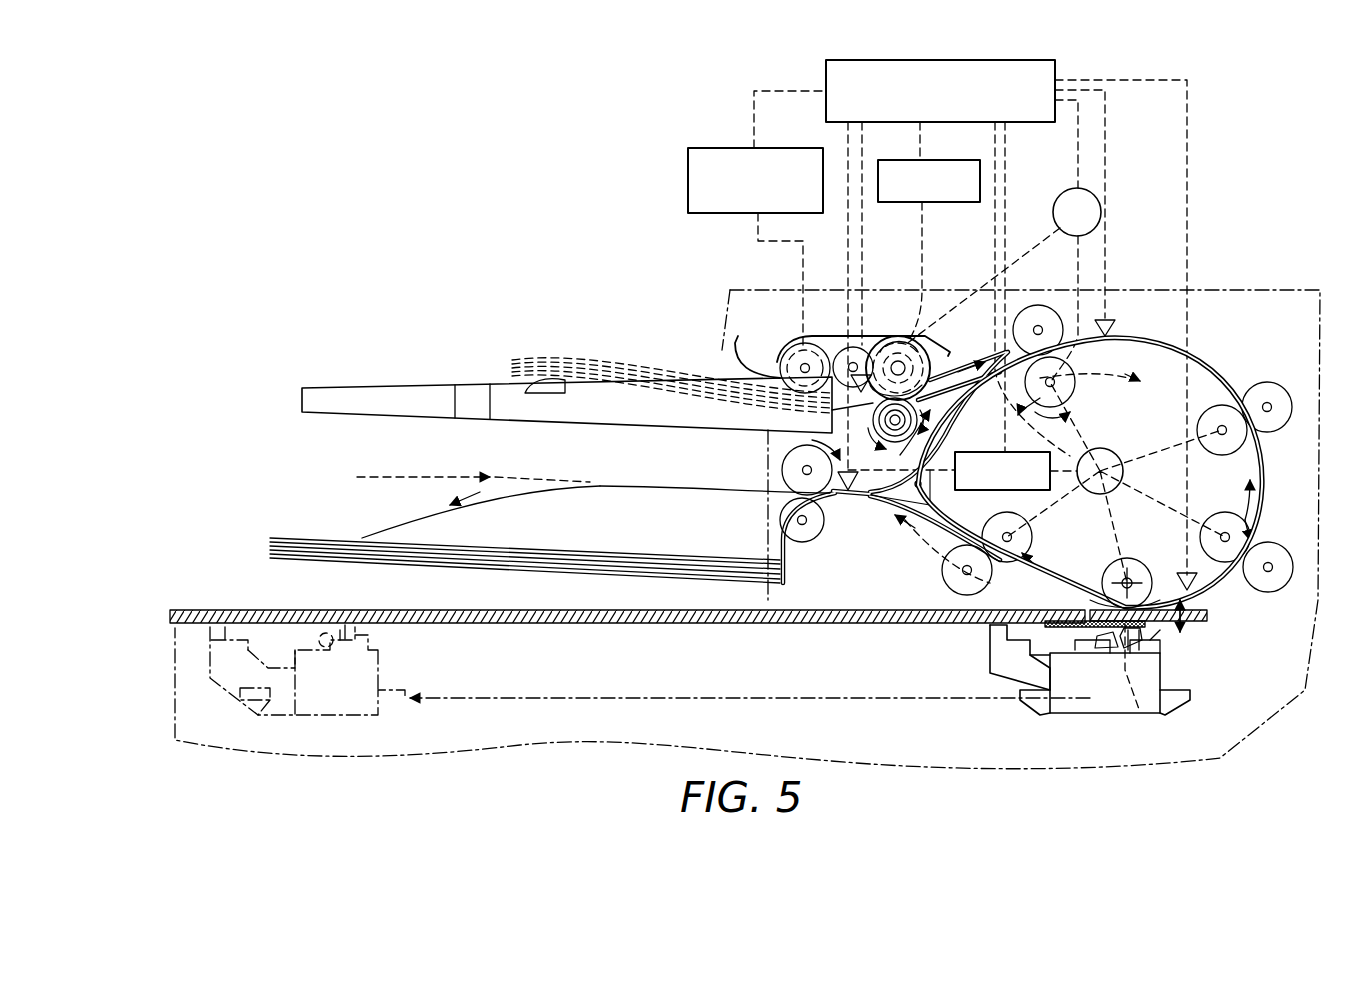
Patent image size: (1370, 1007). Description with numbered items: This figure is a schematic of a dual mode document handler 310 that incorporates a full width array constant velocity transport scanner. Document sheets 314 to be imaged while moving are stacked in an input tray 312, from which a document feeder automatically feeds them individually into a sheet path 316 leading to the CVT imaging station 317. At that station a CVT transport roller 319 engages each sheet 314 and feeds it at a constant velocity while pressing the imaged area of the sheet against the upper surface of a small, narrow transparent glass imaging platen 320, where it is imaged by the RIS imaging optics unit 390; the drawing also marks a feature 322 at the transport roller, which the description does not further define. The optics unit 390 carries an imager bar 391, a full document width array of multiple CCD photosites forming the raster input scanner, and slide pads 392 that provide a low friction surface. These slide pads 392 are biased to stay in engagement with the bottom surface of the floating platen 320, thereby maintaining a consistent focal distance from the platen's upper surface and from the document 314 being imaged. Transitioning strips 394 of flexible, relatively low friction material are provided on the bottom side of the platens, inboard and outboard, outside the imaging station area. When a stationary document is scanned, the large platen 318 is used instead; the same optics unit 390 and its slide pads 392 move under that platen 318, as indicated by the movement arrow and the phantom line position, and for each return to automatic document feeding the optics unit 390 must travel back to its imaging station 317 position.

The dual mode document handler 310 is at (580, 148).
The input tray 312 is at (505, 394).
The document sheets 314 is at (520, 358).
The sheet path 316 is at (1263, 484).
The CVT imaging station 317 is at (1157, 527).
The CVT transport roller 319 is at (1115, 578).
The roller axis 322 is at (1136, 582).
The large platen 318 is at (930, 626).
The transparent glass imaging platen 320 is at (1207, 620).
The transitioning strips 394 is at (1082, 629).
The slide pads 392 is at (1145, 627).
The imager bar 391 is at (1143, 716).
The RIS imaging optics unit 390 is at (1188, 702).